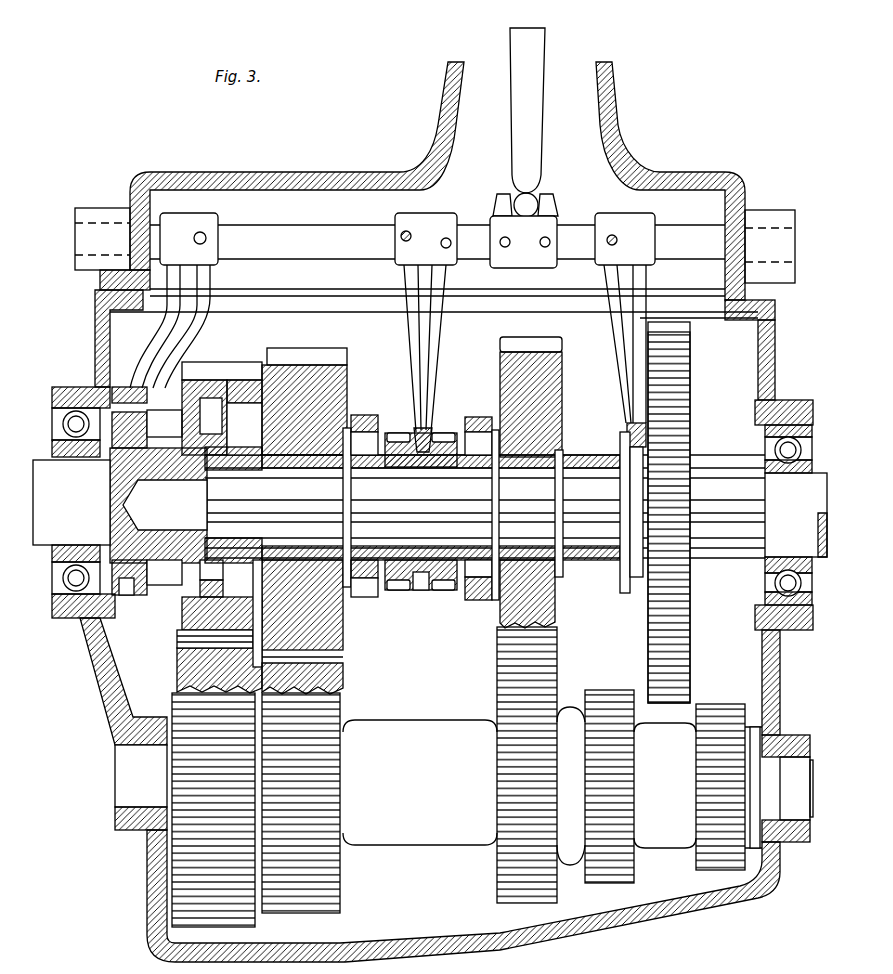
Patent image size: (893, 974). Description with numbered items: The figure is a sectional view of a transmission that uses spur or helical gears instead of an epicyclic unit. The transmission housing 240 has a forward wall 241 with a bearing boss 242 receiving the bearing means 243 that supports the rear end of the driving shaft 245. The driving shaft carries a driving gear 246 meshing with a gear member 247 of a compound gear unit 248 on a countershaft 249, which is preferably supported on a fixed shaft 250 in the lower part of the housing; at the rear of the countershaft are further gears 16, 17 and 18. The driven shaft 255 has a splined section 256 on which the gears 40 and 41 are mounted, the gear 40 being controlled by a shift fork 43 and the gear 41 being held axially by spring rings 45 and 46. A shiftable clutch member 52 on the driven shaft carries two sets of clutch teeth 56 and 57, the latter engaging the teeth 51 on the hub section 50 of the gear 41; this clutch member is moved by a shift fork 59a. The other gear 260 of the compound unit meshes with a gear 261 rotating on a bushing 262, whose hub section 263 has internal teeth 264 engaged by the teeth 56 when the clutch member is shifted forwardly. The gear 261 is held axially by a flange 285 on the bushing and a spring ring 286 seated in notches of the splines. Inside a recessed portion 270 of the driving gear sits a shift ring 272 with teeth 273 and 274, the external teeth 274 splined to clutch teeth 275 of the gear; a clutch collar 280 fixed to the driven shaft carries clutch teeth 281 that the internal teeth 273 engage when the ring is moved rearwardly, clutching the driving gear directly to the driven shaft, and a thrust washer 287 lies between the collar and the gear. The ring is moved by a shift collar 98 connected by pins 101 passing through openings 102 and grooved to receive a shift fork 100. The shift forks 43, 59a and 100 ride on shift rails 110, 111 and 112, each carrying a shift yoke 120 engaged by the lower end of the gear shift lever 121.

The gear 16 is at (497, 690).
The gear 17 is at (606, 712).
The gear 18 is at (715, 710).
The gear 40 is at (677, 368).
The gear 41 is at (552, 370).
The shift fork 43 is at (620, 341).
The spring ring 45 is at (563, 447).
The spring ring 46 is at (500, 492).
The hub section 50 is at (484, 432).
The teeth 51 is at (474, 436).
The shiftable clutch member 52 is at (421, 582).
The clutch teeth 56 is at (399, 433).
The clutch teeth 57 is at (440, 433).
The shift fork 59a is at (440, 322).
The shift collar 98 is at (128, 600).
The shift fork 100 is at (176, 312).
The pins 101 is at (172, 597).
The openings 102 is at (178, 415).
The shift rail 110 is at (681, 240).
The shift rail 111 is at (471, 240).
The shift rail 112 is at (288, 238).
The shift yoke 120 is at (530, 263).
The gear shift lever 121 is at (519, 128).
The transmission housing 240 is at (97, 327).
The forward wall 241 is at (112, 692).
The bearing boss 242 is at (82, 622).
The bearing means 243 is at (74, 420).
The driving shaft 245 is at (62, 600).
The driving gear 246 is at (204, 370).
The gear member 247 is at (175, 680).
The compound gear unit 248 is at (348, 682).
The countershaft 249 is at (413, 730).
The fixed shaft 250 is at (125, 775).
The driven shaft 255 is at (724, 471).
The splined section 256 is at (584, 510).
The gear 260 is at (342, 887).
The gear 261 is at (315, 352).
The bushing 262 is at (309, 458).
The hub section 263 is at (366, 417).
The internal teeth 264 is at (370, 589).
The recessed portion 270 is at (232, 410).
The shift ring 272 is at (214, 577).
The teeth 273 is at (213, 543).
The teeth 274 is at (218, 597).
The clutch teeth 275 is at (247, 390).
The clutch collar 280 is at (256, 480).
The clutch teeth 281 is at (250, 452).
The flange 285 is at (266, 548).
The spring ring 286 is at (344, 528).
The thrust washer 287 is at (202, 480).